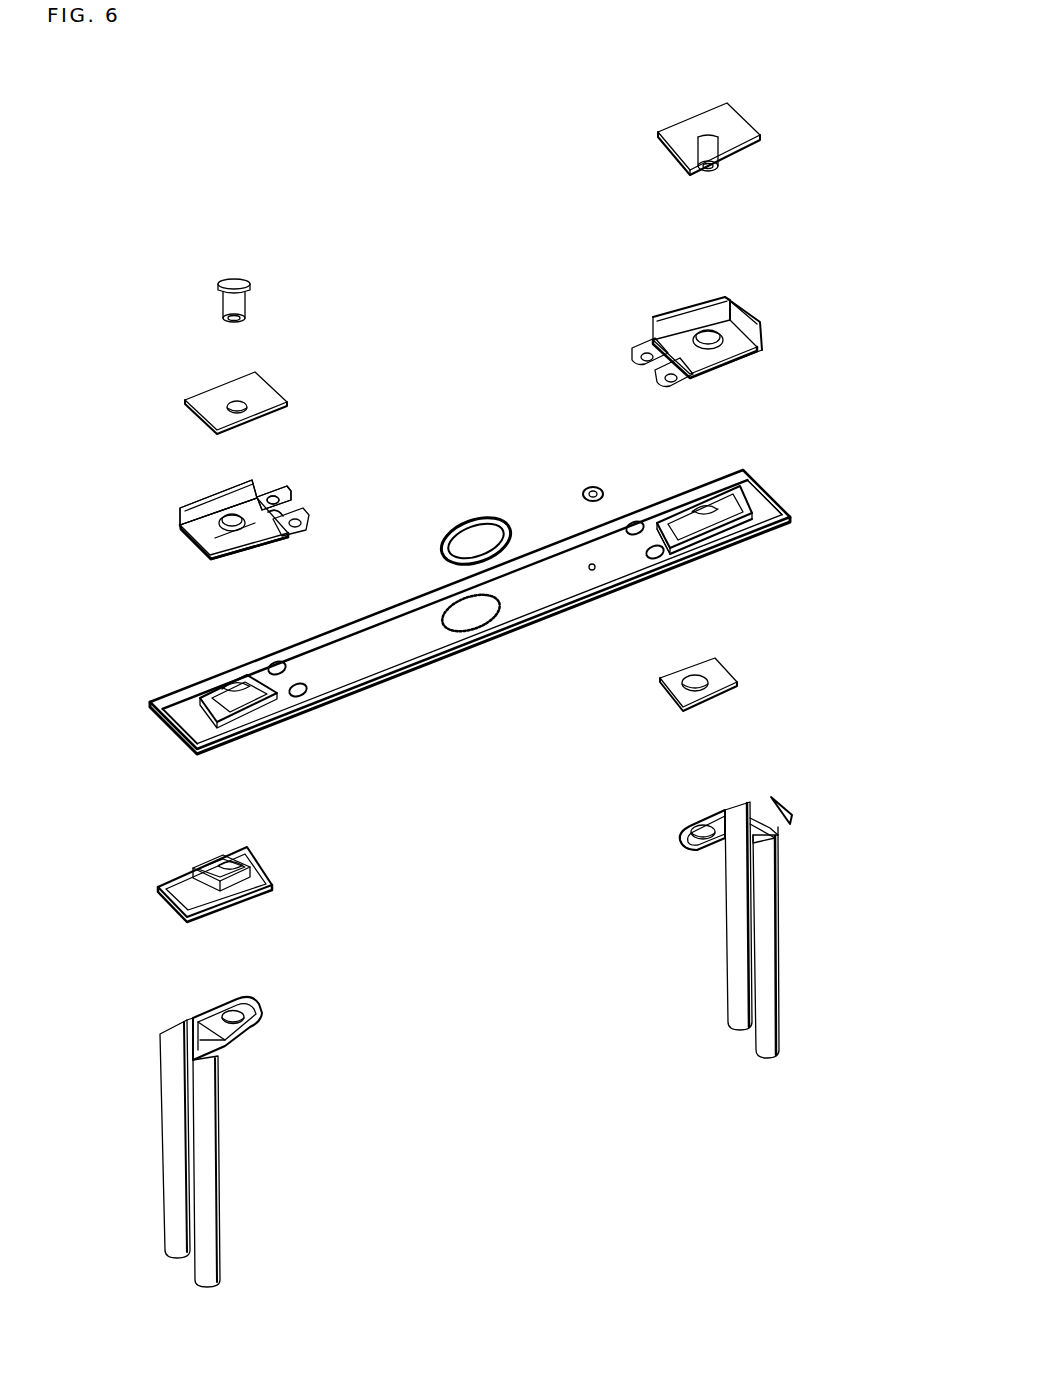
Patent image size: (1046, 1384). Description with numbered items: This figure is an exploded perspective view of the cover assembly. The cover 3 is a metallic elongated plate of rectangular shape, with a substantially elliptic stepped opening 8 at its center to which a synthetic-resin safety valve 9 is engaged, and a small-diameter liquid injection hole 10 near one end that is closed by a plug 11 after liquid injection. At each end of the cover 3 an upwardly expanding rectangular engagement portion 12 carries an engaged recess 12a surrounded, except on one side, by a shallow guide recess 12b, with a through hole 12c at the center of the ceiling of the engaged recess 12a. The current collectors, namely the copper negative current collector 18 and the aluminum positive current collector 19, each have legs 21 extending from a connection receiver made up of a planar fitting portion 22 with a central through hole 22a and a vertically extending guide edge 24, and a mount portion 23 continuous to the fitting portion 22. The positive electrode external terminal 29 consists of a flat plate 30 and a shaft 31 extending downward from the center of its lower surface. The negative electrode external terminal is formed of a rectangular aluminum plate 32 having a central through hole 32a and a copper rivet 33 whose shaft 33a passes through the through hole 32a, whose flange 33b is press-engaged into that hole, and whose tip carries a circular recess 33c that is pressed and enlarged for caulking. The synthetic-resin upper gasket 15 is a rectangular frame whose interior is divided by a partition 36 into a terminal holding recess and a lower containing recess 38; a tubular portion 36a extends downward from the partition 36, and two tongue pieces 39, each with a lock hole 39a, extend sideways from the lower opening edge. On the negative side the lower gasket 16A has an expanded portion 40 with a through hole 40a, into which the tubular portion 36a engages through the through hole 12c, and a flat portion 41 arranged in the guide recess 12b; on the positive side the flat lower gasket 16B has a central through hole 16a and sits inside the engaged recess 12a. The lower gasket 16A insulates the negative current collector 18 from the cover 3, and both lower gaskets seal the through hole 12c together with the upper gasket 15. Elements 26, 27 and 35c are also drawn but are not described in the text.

The cover 3 is at (405, 660).
The opening 8 is at (484, 630).
The safety valve 9 is at (460, 522).
The liquid injection hole 10 is at (594, 572).
The plug 11 is at (588, 487).
The engagement portion 12 is at (205, 696).
The engaged recess 12a is at (705, 548).
The guide recess 12b is at (760, 528).
The through hole 12c is at (680, 552).
The upper gasket 15 is at (655, 320).
The lower gasket on the negative electrode side 16A is at (232, 895).
The lower gasket on the positive electrode side 16B is at (761, 690).
The through hole 16a is at (697, 693).
The negative current collector 18 is at (222, 1148).
The positive current collector 19 is at (741, 952).
The legs 21 is at (782, 900).
The fitting portion 22 is at (675, 825).
The through hole 22a is at (708, 846).
The mount portion 23 is at (782, 850).
The guide edge 24 is at (683, 848).
The connecting piece 26 is at (765, 825).
The wedge 27 is at (792, 812).
The positive electrode external terminal 29 is at (676, 148).
The flat plate 30 is at (658, 133).
The shaft 31 is at (695, 156).
The boss end 35c is at (708, 170).
The aluminum plate 32 is at (206, 413).
The through hole 32a is at (240, 413).
The rivet 33 is at (241, 318).
The shaft 33a is at (244, 300).
The flange 33b is at (252, 283).
The recess 33c is at (238, 323).
The partition 36 is at (195, 535).
The tubular portion 36a is at (258, 540).
The lower containing recess 38 is at (210, 558).
The tongue pieces 39 is at (290, 497).
The lock hole 39a is at (285, 514).
The expanded portion 40 is at (283, 892).
The through hole 40a is at (246, 892).
The flat portion 41 is at (185, 908).